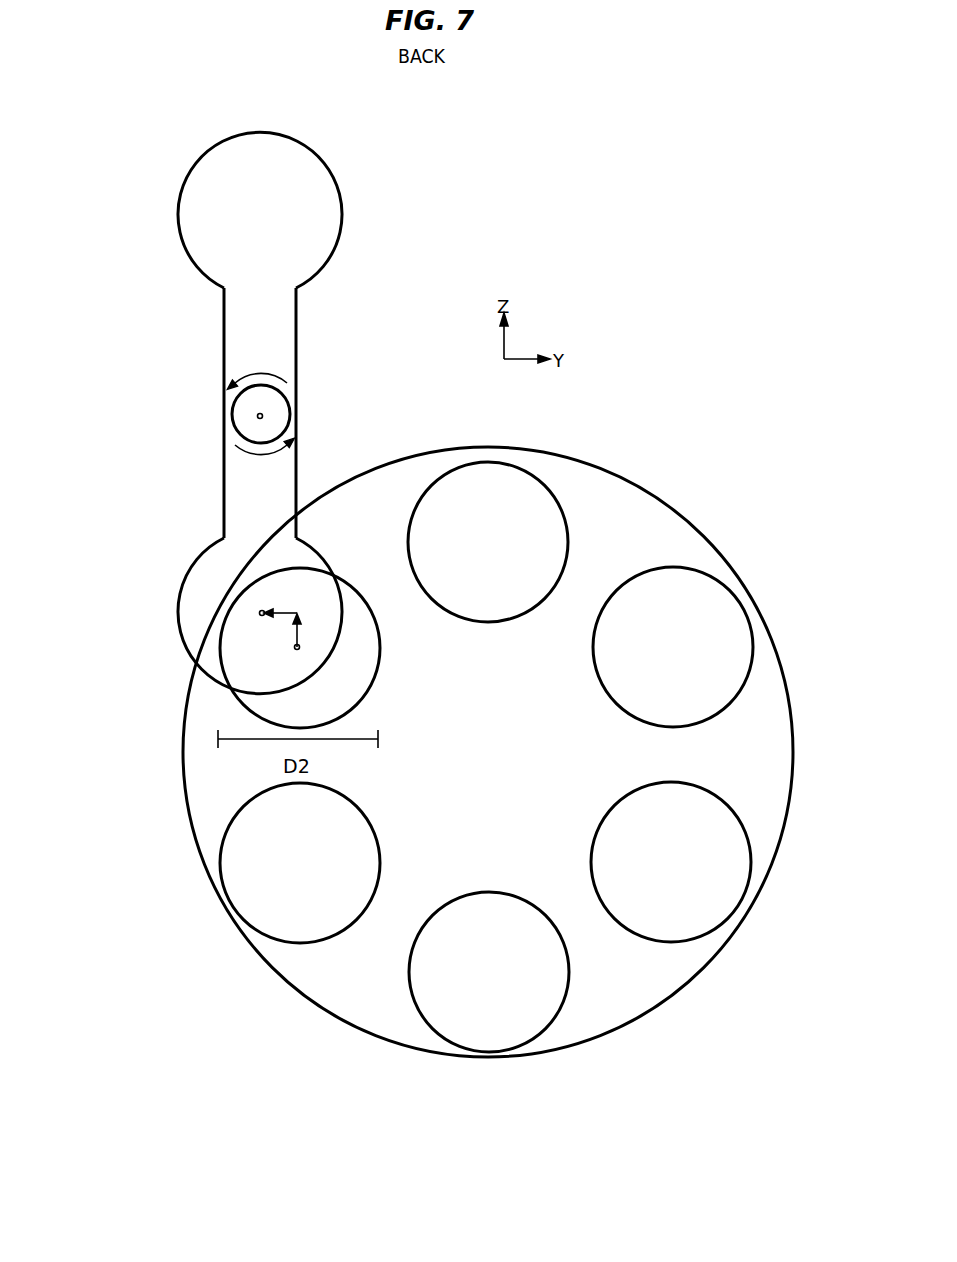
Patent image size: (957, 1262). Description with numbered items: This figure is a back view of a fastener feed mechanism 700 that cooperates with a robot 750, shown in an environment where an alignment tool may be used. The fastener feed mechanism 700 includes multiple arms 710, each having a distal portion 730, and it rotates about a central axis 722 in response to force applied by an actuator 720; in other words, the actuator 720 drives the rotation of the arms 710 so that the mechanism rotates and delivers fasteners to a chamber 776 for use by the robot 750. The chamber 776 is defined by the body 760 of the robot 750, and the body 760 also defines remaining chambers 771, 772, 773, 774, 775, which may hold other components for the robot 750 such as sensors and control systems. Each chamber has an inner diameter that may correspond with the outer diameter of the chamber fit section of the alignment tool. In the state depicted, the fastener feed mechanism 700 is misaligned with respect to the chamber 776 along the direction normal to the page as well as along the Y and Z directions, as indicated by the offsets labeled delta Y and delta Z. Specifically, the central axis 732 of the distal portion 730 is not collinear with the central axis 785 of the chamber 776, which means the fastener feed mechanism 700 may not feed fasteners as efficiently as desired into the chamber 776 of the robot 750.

The fastener feed mechanism 700 is at (108, 428).
The arms 710 is at (224, 336).
The actuator 720 is at (285, 397).
The central axis 722 is at (258, 416).
The distal portions 730 is at (185, 245).
The central axis of distal portion 732 is at (260, 613).
The robot 750 is at (811, 884).
The body 760 is at (793, 717).
The chamber 771 is at (563, 512).
The chamber 772 is at (596, 672).
The chamber 773 is at (716, 793).
The chamber 774 is at (490, 892).
The chamber 775 is at (371, 822).
The chamber 776 is at (377, 637).
The central axis of chamber 785 is at (299, 648).